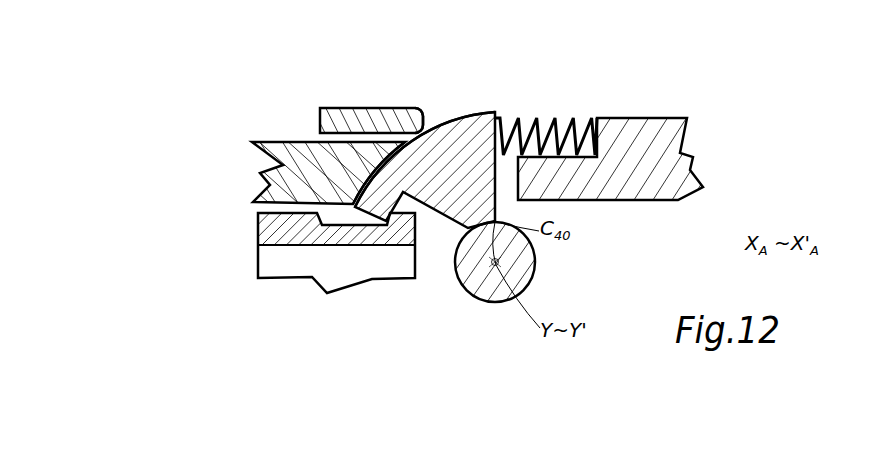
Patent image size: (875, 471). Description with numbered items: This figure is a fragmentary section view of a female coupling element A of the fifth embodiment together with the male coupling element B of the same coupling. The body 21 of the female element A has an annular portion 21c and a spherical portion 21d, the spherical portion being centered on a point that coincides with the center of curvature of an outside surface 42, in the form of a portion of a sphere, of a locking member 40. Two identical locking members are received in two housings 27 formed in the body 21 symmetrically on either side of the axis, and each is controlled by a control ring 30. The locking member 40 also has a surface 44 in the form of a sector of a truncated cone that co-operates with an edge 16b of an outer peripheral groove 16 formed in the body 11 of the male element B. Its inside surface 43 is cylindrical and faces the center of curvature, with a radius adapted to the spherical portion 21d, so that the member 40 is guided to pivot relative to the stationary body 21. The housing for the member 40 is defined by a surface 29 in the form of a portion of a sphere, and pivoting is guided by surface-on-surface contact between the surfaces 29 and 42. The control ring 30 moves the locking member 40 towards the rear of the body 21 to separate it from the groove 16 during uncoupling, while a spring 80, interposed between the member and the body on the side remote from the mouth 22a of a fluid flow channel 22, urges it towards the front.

The body 11 is at (275, 234).
The outer peripheral groove 16 is at (335, 218).
The edge 16b is at (380, 213).
The body 21 is at (808, 136).
The annular portion 21c is at (655, 131).
The spherical portion 21d is at (536, 254).
The fluid flow channel 22 is at (437, 242).
The mouth 22a is at (258, 208).
The housing 27 is at (382, 166).
The surface 29 is at (418, 130).
The control ring 30 is at (353, 108).
The locking member 40 is at (465, 187).
The outside surface 42 is at (457, 111).
The inside surface 43 is at (466, 291).
The surface 44 is at (452, 236).
The spring 80 is at (552, 118).
The female element A is at (658, 107).
The male coupling element B is at (256, 279).